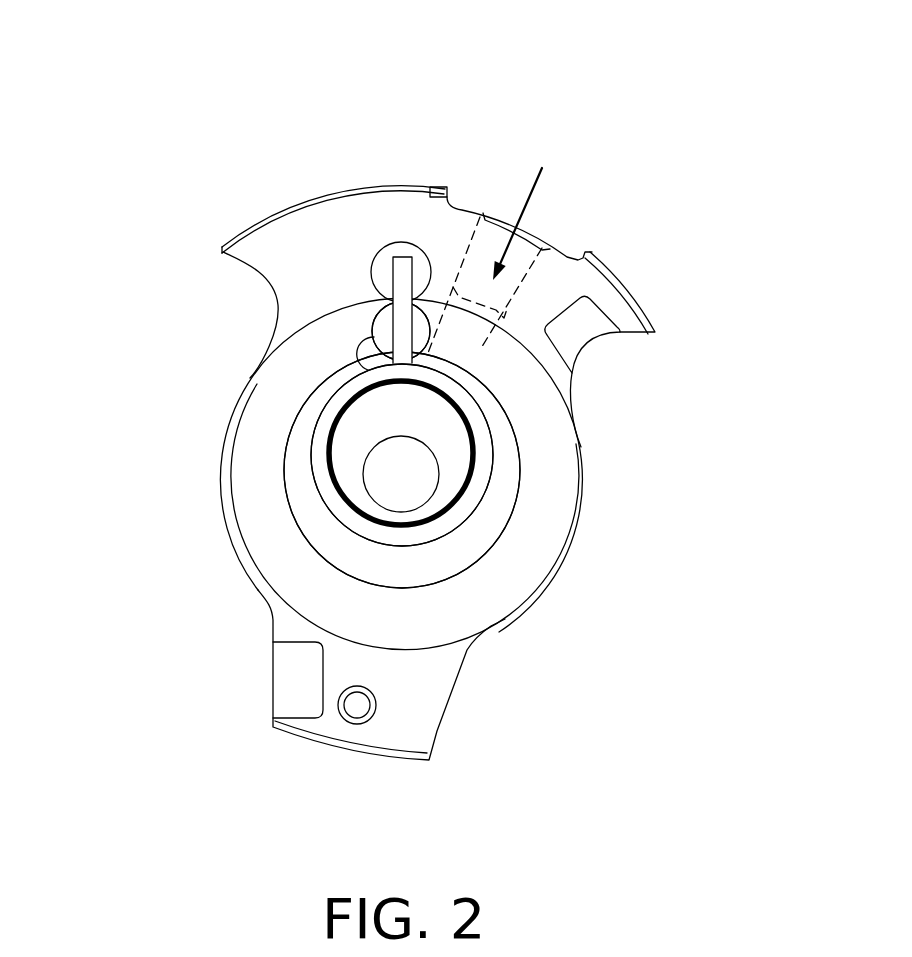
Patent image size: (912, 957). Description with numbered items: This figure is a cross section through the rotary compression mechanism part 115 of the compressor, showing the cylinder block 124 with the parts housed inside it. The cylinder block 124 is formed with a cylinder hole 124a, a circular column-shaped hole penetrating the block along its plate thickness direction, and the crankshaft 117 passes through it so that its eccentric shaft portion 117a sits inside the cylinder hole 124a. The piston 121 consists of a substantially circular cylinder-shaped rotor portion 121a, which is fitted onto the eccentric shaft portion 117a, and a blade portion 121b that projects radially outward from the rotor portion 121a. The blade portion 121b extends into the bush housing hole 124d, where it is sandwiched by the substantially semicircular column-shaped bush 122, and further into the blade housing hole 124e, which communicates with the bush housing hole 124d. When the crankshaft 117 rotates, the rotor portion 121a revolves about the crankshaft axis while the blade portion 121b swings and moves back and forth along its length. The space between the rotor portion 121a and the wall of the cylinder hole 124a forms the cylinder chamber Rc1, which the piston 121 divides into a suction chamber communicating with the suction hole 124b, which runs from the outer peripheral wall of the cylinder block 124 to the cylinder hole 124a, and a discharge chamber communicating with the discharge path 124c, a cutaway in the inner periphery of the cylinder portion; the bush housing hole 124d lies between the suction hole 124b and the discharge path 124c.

The rotary compression mechanism part 115 is at (652, 110).
The blade housing hole 124e is at (424, 256).
The blade portion 121b is at (400, 272).
The bush housing hole 124d is at (385, 306).
The bush 122 is at (375, 326).
The discharge path 124c is at (348, 352).
The rotor portion 121a is at (322, 429).
The piston 121 is at (298, 487).
The crankshaft 117 is at (393, 488).
The eccentric shaft portion 117a is at (450, 440).
The cylinder hole 124a is at (504, 517).
The cylinder block 124 is at (563, 557).
The suction hole 124b is at (495, 294).
The cylinder chamber Rc1 is at (410, 566).